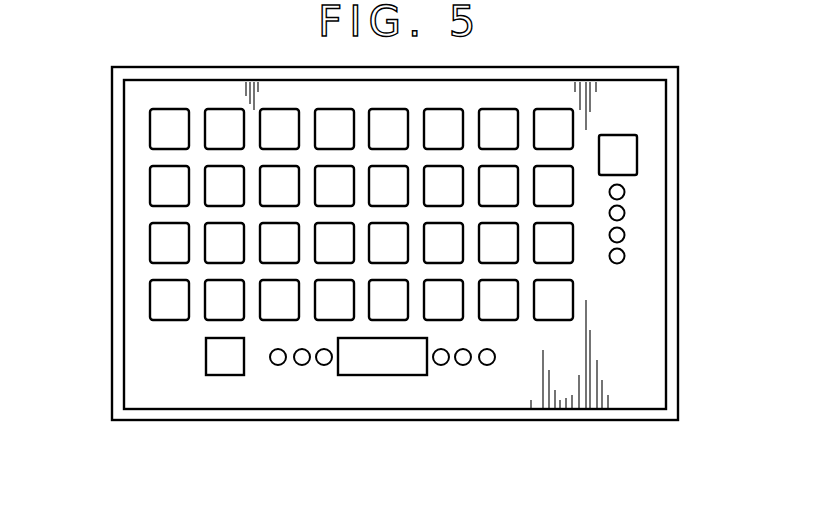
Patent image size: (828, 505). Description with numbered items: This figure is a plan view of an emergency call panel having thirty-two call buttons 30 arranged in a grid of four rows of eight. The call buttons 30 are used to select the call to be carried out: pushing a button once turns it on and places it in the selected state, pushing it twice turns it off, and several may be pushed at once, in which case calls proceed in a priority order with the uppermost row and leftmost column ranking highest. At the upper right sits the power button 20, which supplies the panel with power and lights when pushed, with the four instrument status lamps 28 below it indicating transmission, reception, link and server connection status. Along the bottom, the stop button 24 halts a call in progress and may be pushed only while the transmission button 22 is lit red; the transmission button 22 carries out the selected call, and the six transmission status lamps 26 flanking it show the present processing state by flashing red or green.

The power button 20 is at (620, 155).
The transmission button 22 is at (352, 363).
The stop button 24 is at (216, 360).
The transmission status lamps 26 is at (490, 362).
The instrument status lamps 28 is at (623, 193).
The call buttons 30 is at (165, 127).